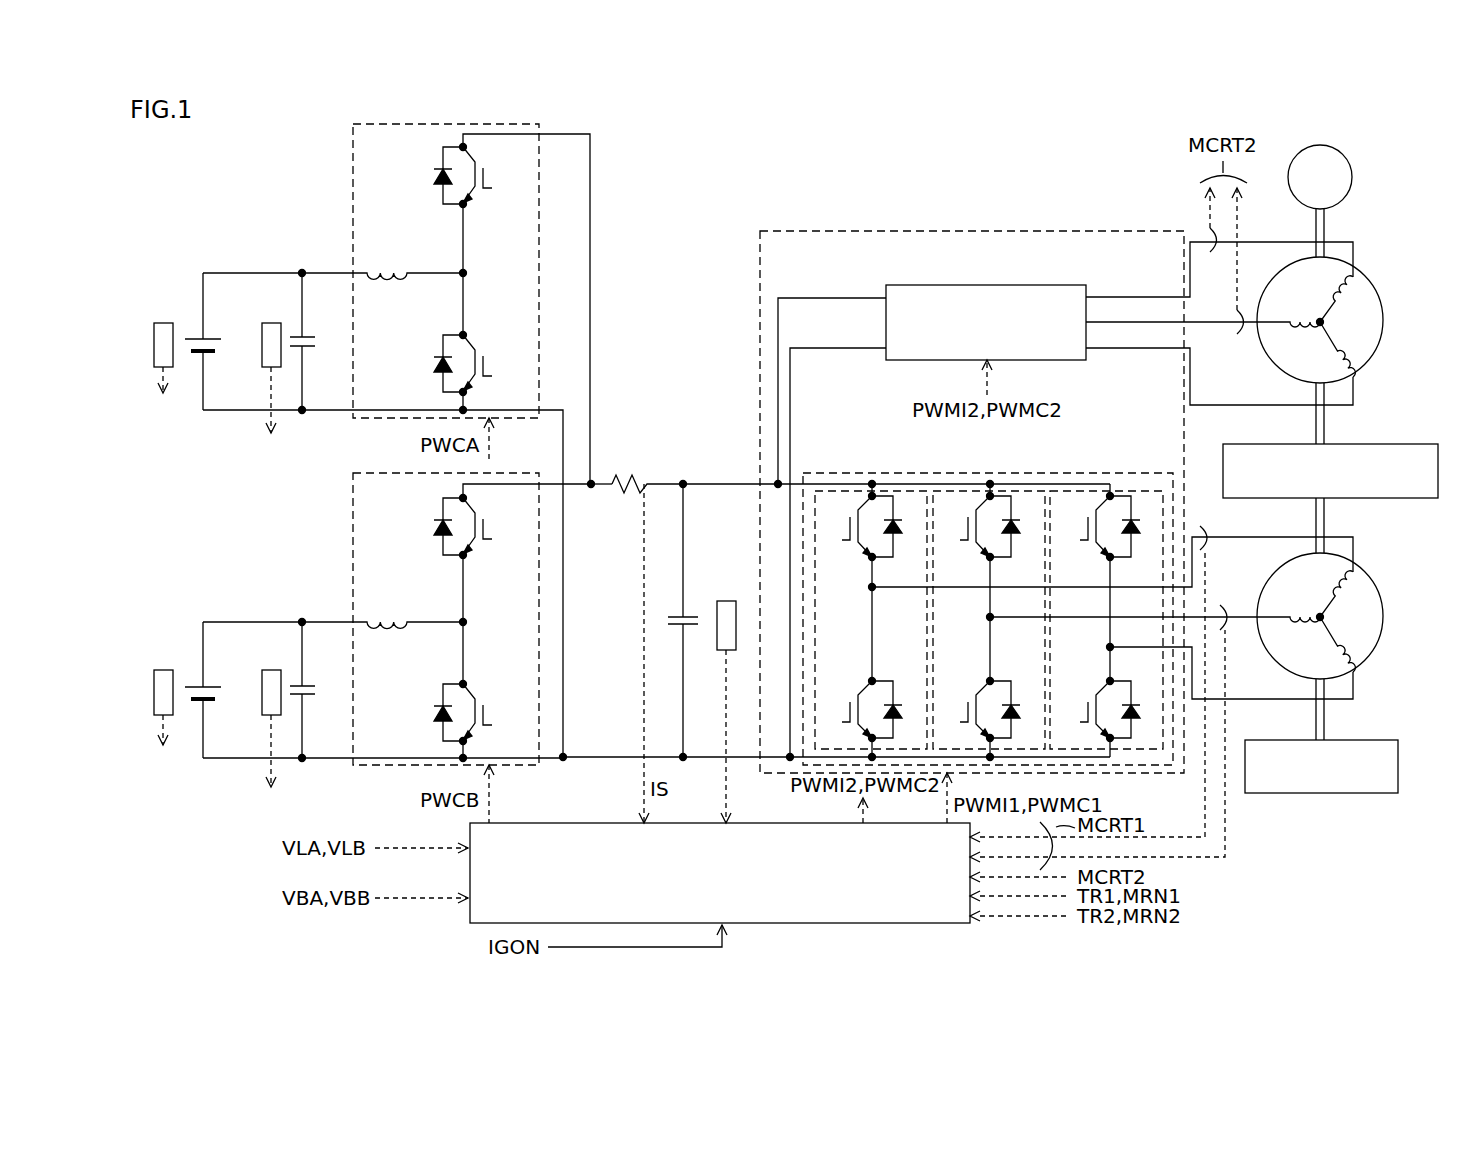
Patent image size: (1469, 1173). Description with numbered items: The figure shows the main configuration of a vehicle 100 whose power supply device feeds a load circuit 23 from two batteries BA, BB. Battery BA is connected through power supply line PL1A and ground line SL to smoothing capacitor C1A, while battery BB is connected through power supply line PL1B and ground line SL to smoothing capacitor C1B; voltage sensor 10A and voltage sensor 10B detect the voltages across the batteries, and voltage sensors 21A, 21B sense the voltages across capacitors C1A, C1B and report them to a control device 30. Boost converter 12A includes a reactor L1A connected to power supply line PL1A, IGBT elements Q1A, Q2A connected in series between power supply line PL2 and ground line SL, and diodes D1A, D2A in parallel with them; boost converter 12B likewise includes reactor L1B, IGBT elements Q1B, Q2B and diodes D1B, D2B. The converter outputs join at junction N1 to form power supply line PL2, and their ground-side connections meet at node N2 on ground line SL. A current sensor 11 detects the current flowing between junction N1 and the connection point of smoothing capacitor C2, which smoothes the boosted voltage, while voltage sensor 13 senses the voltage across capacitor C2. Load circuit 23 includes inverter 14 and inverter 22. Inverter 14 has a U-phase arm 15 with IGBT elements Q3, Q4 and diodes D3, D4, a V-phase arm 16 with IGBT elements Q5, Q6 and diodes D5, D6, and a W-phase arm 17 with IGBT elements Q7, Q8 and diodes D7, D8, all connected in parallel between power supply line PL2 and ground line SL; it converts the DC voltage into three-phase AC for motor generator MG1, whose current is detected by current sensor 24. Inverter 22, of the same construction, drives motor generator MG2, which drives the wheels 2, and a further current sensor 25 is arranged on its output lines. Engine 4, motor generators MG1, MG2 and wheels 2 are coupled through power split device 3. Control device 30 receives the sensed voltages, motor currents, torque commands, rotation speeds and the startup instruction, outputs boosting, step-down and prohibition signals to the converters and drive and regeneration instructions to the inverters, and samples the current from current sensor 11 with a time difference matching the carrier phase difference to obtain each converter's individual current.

The vehicle 100 is at (1004, 156).
The wheels 2 is at (1352, 176).
The power split device 3 is at (1368, 444).
The engine 4 is at (1368, 740).
The voltage sensor 10A is at (163, 323).
The voltage sensor 10B is at (163, 670).
The current sensor 11 is at (638, 479).
The boost converter 12A is at (353, 165).
The boost converter 12B is at (353, 511).
The voltage sensor 13 is at (725, 600).
The inverter 14 is at (838, 472).
The U-phase arm 15 is at (903, 490).
The V-phase arm 16 is at (1021, 490).
The W-phase arm 17 is at (1140, 490).
The voltage sensor 21A is at (271, 323).
The voltage sensor 21B is at (271, 670).
The inverter 22 is at (1050, 285).
The load circuit 23 is at (838, 230).
The current sensor 24 is at (1201, 525).
The current sensor 25 is at (1210, 252).
The control device 30 is at (905, 923).
The motor generator MG1 is at (1368, 565).
The motor generator MG2 is at (1368, 272).
The battery BA is at (220, 339).
The battery BB is at (220, 687).
The smoothing capacitor C1A is at (309, 348).
The smoothing capacitor C1B is at (309, 697).
The smoothing capacitor C2 is at (689, 628).
The reactor L1A is at (382, 259).
The reactor L1B is at (382, 608).
The IGBT element Q1A is at (497, 176).
The IGBT element Q2A is at (497, 364).
The IGBT element Q1B is at (497, 527).
The IGBT element Q2B is at (497, 713).
The diode D1A is at (425, 175).
The diode D2A is at (425, 363).
The diode D1B is at (425, 526).
The diode D2B is at (425, 712).
The IGBT element Q3 is at (846, 527).
The IGBT element Q4 is at (846, 710).
The IGBT element Q5 is at (964, 527).
The IGBT element Q6 is at (964, 710).
The IGBT element Q7 is at (1084, 527).
The IGBT element Q8 is at (1084, 710).
The diode D3 is at (897, 530).
The diode D4 is at (897, 715).
The diode D5 is at (1015, 530).
The diode D6 is at (1015, 715).
The diode D7 is at (1135, 530).
The diode D8 is at (1135, 715).
The power supply line PL1A is at (240, 273).
The power supply line PL1B is at (240, 622).
The power supply line PL2 is at (838, 297).
The ground line SL is at (240, 758).
The junction N1 is at (591, 488).
The node N2 is at (566, 756).